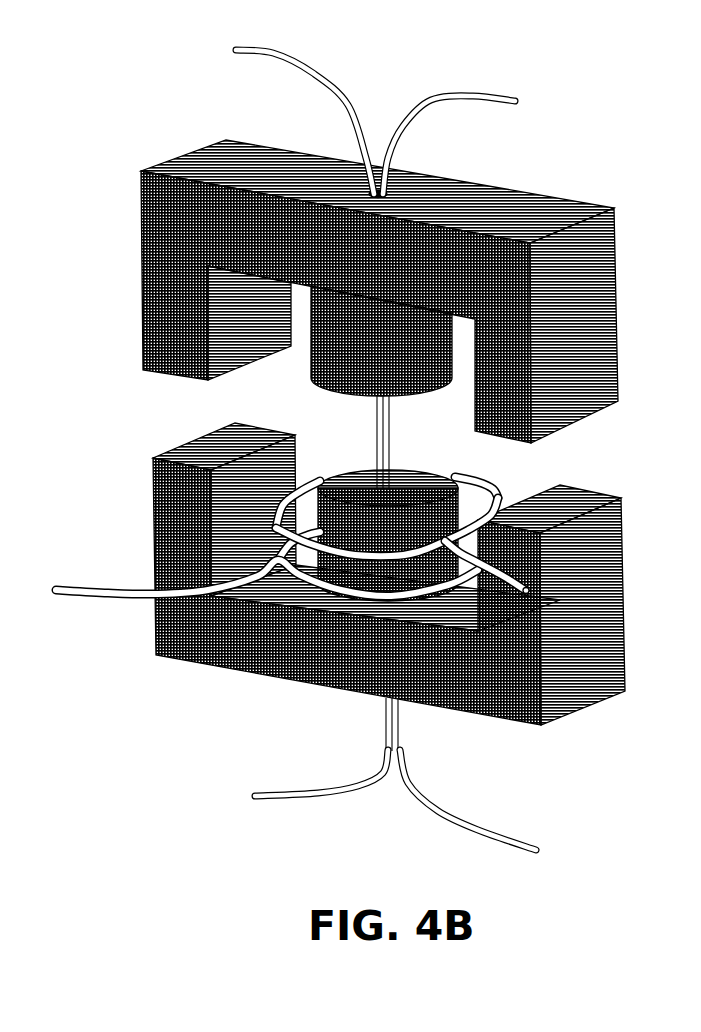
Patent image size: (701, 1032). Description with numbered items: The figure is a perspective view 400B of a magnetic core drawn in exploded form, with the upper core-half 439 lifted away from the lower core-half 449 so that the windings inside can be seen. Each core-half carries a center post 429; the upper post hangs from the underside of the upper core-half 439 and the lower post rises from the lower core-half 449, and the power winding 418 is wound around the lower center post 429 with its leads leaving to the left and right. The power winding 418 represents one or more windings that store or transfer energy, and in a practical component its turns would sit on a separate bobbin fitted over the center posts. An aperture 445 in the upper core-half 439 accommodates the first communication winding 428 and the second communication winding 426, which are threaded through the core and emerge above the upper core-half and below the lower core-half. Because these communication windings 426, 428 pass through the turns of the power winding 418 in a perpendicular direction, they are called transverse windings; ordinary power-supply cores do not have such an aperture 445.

The perspective view 400B is at (680, 67).
The power winding 418 is at (85, 598).
The second communication winding 426 is at (473, 80).
The first communication winding 428 is at (248, 54).
The center post 429 is at (396, 345).
The upper core-half 439 is at (591, 346).
The aperture 445 is at (371, 184).
The lower core-half 449 is at (601, 568).